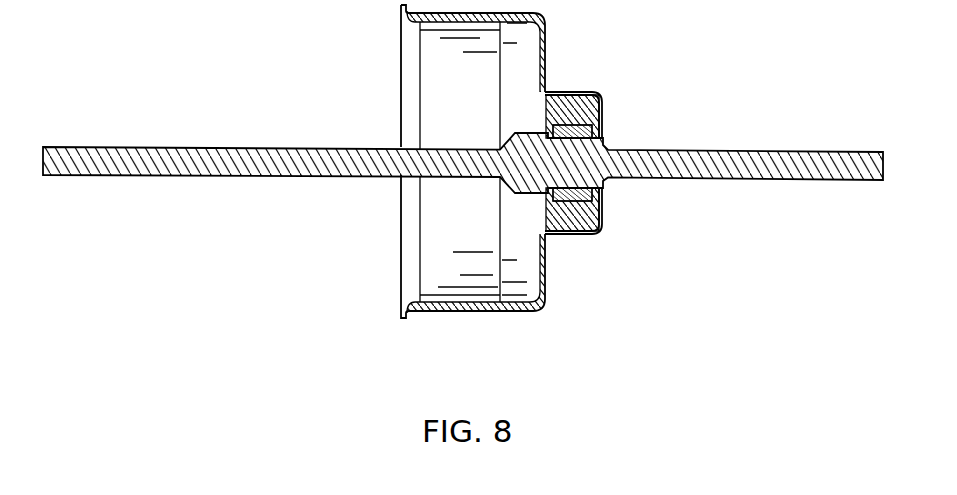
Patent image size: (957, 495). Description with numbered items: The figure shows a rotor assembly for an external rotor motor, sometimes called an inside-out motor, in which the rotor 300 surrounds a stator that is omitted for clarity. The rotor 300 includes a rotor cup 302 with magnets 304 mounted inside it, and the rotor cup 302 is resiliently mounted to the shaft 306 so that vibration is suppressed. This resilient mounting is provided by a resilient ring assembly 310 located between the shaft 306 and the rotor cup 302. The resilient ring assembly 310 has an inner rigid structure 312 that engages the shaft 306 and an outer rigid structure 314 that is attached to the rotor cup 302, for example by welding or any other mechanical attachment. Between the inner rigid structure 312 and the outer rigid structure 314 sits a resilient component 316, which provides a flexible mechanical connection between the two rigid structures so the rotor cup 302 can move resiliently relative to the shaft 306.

The rotor 300 is at (562, 318).
The rotor cup 302 is at (455, 312).
The magnets 304 is at (432, 26).
The shaft 306 is at (781, 182).
The resilient ring assembly 310 is at (604, 106).
The inner rigid structure 312 is at (590, 197).
The outer rigid structure 314 is at (577, 237).
The resilient component 316 is at (567, 103).